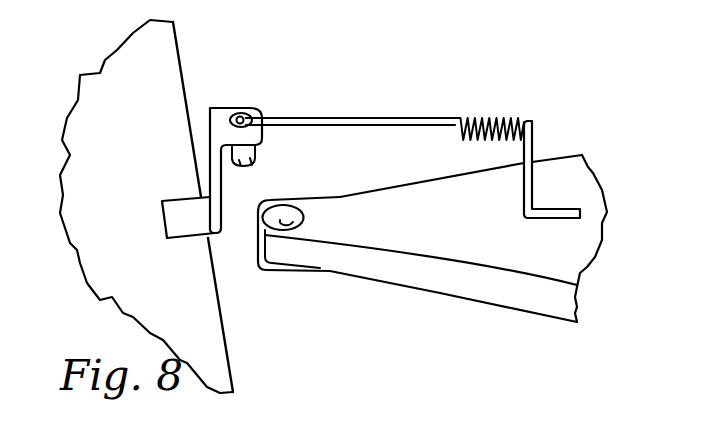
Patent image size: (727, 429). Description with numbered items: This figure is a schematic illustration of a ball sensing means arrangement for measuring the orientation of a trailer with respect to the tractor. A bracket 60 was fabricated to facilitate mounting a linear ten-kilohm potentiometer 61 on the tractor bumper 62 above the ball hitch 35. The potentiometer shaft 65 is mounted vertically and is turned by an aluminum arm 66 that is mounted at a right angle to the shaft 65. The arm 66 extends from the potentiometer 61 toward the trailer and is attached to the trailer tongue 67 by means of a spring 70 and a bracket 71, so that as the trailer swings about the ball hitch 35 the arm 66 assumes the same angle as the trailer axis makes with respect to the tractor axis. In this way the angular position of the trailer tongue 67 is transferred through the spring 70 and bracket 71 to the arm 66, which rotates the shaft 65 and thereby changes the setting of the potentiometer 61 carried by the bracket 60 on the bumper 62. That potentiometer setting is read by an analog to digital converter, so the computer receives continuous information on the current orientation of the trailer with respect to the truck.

The ball hitch 35 is at (293, 270).
The bracket 60 is at (208, 110).
The linear 10K potentiometer 61 is at (249, 165).
The tractor bumper 62 is at (217, 360).
The potentiometer shaft 65 is at (247, 115).
The aluminum arm 66 is at (348, 118).
The trailer tongue 67 is at (343, 210).
The spring 70 is at (478, 118).
The bracket 71 is at (533, 157).